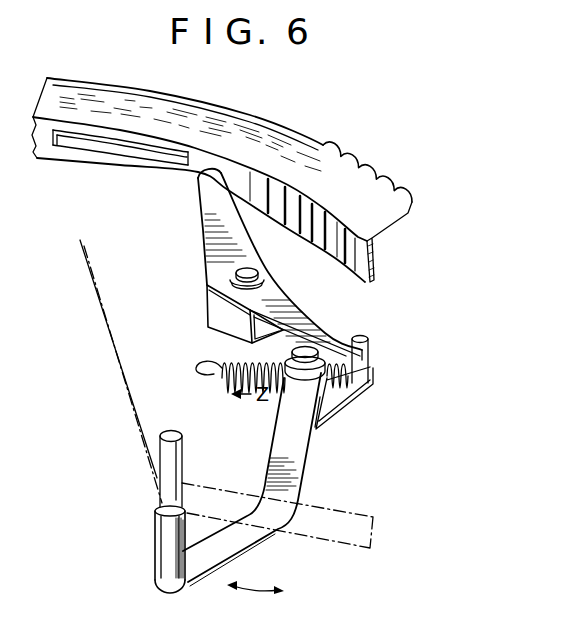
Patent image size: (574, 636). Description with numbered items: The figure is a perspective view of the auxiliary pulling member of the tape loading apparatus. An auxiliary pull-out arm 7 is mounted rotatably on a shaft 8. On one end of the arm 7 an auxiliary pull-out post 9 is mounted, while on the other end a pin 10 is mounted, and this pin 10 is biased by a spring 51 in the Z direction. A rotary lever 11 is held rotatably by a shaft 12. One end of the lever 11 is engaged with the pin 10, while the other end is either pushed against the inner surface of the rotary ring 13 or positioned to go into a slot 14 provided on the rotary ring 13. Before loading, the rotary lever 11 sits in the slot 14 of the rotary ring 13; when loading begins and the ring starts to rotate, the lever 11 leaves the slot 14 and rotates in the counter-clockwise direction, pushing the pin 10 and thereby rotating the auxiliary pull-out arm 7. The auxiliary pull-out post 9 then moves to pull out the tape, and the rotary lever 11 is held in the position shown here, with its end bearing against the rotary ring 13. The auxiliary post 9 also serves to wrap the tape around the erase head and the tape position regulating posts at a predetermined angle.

The auxiliary pull-out arm 7 is at (241, 531).
The shaft 8 is at (310, 348).
The auxiliary pull-out post 9 is at (165, 536).
The pin 10 is at (368, 337).
The rotary lever 11 is at (285, 303).
The shaft 12 is at (258, 273).
The rotary ring 13 is at (361, 168).
The slot 14 is at (133, 150).
The spring 51 is at (219, 380).